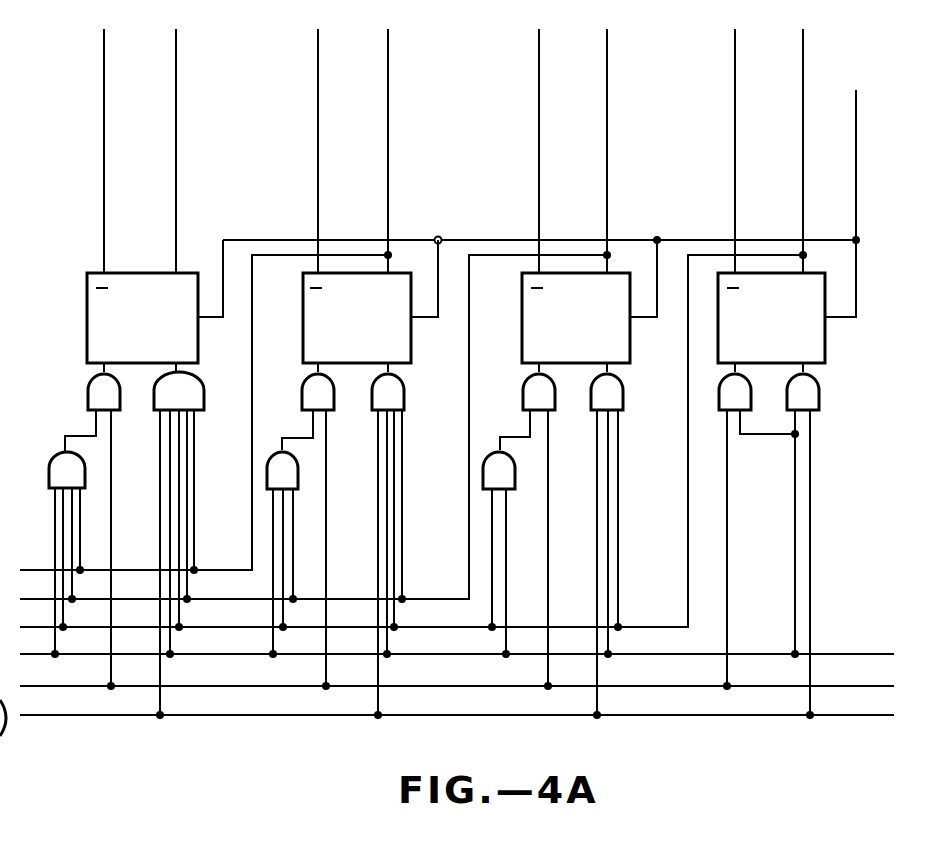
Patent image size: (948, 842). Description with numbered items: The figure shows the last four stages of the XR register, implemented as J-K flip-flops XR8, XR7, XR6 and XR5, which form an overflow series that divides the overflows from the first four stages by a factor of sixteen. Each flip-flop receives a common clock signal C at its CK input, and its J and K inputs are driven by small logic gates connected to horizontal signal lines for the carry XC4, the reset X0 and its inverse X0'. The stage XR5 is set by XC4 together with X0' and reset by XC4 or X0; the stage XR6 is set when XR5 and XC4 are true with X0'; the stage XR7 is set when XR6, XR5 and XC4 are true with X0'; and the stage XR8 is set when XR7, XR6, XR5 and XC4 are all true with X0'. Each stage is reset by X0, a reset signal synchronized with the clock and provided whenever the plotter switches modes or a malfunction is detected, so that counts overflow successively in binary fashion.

The XR register eighth stage flip-flop XR8 is at (136, 374).
The XR register seventh stage flip-flop XR7 is at (352, 374).
The XR register sixth stage flip-flop XR6 is at (570, 374).
The XR register fifth stage flip-flop XR5 is at (787, 374).
The clock signal C is at (856, 90).
The XC4 carry gate XC4 is at (918, 653).
The X0 reset signal X0 is at (912, 684).
The X0' inverted reset signal X0' is at (915, 713).